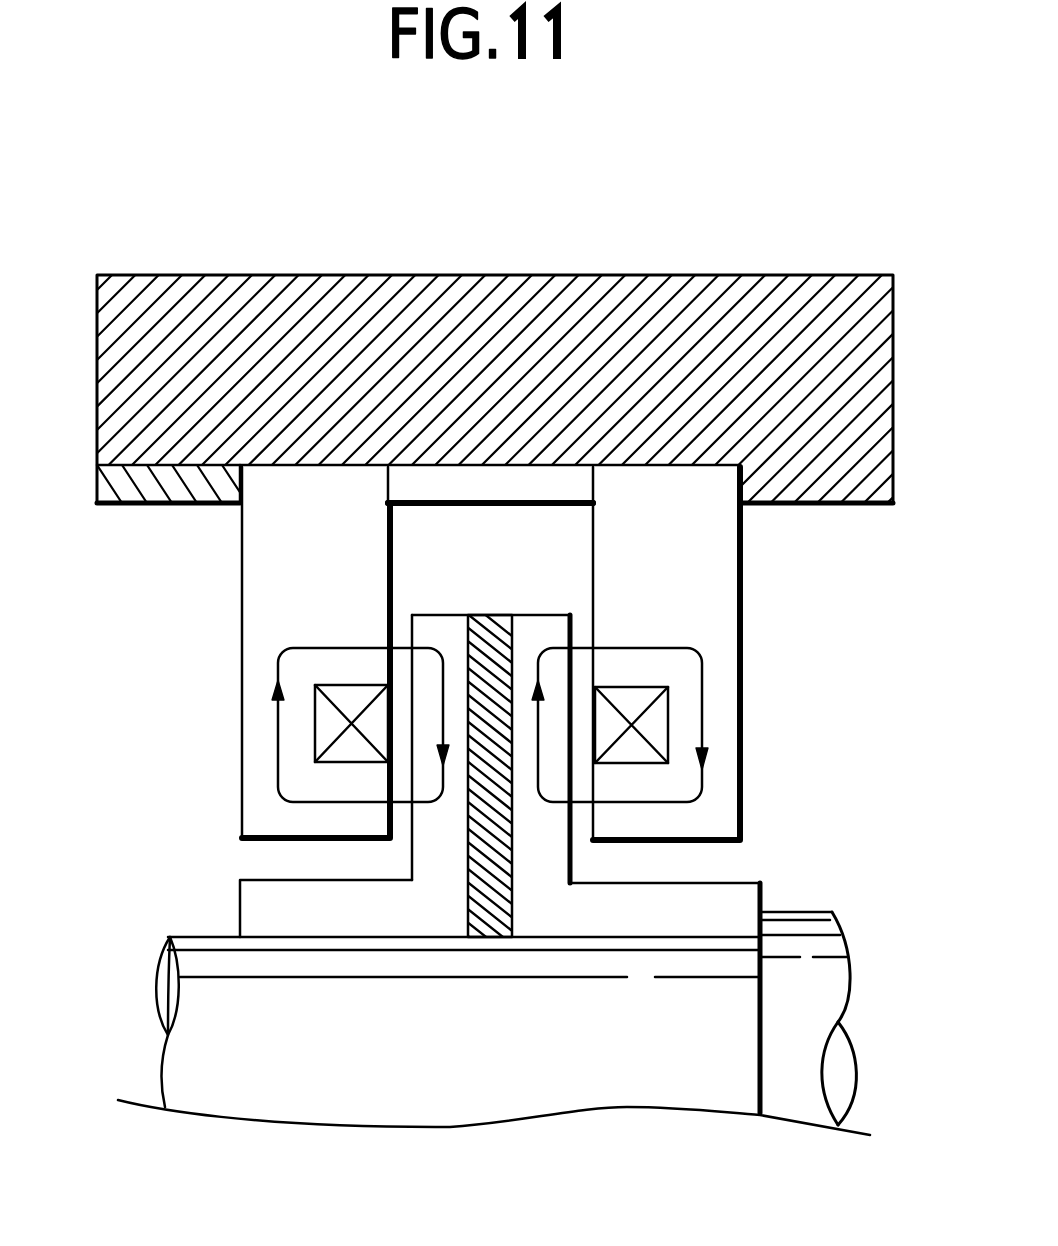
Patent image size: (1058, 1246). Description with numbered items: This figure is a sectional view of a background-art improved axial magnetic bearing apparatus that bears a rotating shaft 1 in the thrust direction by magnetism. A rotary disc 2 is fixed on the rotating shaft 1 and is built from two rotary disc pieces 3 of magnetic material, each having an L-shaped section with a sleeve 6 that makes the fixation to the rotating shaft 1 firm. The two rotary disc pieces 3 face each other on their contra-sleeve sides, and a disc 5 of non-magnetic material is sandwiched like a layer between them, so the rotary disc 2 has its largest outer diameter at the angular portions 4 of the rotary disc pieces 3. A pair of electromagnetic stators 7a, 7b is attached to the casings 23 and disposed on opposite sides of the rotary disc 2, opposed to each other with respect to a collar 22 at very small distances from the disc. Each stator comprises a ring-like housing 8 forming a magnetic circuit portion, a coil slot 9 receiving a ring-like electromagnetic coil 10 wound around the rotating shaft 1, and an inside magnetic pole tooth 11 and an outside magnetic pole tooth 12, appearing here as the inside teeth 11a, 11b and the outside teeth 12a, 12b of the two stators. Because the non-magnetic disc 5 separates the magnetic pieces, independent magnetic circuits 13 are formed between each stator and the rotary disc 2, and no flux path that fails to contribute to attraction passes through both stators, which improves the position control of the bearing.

The rotating shaft 1 is at (208, 992).
The rotary disc 2 is at (484, 786).
The rotary disc piece 3 is at (423, 633).
The angular portion 4 is at (460, 900).
The non-magnetic disc 5 is at (470, 893).
The sleeve 6 is at (278, 908).
The left yoke 7a is at (242, 806).
The right yoke 7b is at (742, 822).
The ring-like housing 8 is at (275, 540).
The coil slot 9 is at (313, 718).
The electromagnetic coil 10 is at (313, 742).
The inside magnetic pole tooth 11 is at (487, 869).
The left bearing portion 11a is at (410, 838).
The right bearing portion 11b is at (570, 840).
The outside magnetic pole tooth 12 is at (659, 539).
The gap portion 12a is at (388, 567).
The thin plate portion 12b is at (592, 588).
The independent magnetic circuit 13 is at (280, 672).
The collar 22 is at (485, 500).
The casing 23 is at (170, 312).